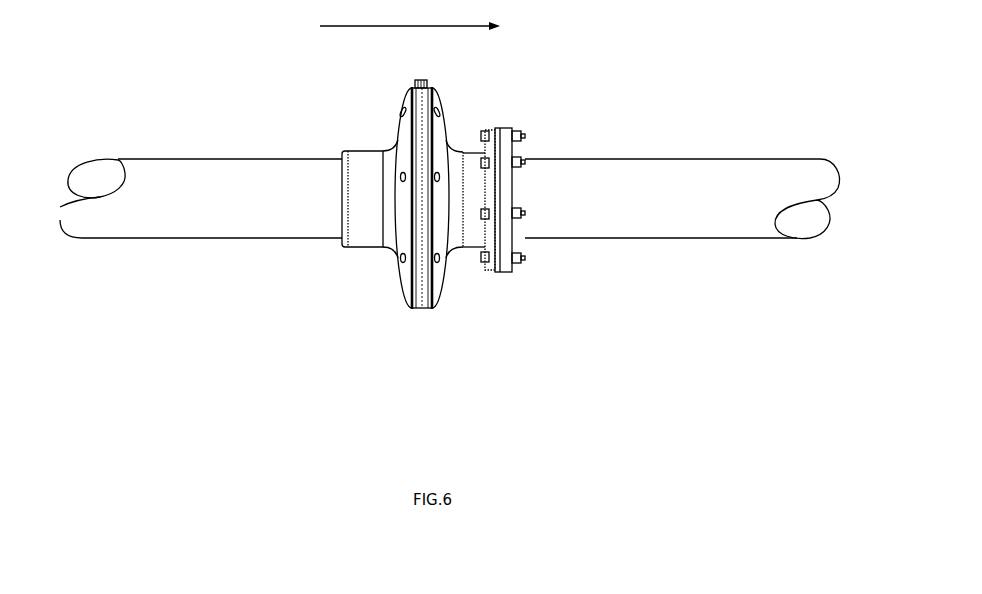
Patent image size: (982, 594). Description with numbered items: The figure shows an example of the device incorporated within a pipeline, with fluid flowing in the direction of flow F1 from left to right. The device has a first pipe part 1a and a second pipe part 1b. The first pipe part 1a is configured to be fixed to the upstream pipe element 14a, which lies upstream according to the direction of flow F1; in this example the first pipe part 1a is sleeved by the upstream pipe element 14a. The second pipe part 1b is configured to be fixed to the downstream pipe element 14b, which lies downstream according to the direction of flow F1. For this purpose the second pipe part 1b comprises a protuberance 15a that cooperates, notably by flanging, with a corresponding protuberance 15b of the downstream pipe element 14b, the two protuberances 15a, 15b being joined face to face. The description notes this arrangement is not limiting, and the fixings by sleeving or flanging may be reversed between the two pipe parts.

The direction of flow F1 is at (410, 16).
The upstream pipe element 14a is at (202, 177).
The downstream pipe element 14b is at (643, 172).
The first pipe part 1a is at (356, 225).
The second pipe part 1b is at (463, 165).
The protuberance 15a is at (500, 128).
The corresponding protuberance 15b is at (508, 128).